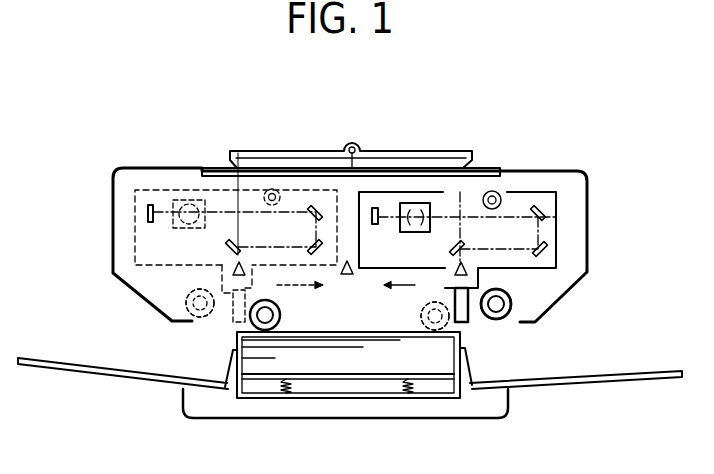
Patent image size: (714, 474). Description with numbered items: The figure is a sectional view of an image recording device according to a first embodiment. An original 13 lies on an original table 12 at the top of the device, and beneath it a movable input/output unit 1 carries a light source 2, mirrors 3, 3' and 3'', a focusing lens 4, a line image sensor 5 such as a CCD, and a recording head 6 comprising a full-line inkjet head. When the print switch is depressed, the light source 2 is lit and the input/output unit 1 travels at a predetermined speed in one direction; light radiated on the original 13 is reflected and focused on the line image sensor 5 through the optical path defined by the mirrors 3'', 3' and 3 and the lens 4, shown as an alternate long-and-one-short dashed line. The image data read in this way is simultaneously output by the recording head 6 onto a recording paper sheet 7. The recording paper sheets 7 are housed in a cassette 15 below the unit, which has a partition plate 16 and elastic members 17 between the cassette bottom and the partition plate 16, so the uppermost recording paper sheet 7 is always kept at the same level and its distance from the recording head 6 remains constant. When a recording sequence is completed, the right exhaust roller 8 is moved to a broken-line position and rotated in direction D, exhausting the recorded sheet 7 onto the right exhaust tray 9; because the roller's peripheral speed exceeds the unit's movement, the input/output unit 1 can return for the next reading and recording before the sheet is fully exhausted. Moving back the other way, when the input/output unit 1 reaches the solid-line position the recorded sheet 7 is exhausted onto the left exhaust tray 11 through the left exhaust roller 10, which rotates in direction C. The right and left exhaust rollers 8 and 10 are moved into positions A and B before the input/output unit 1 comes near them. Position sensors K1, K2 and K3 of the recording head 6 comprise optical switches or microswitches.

The input/output unit 1 is at (533, 192).
The light source 2 is at (489, 192).
The mirror 3 is at (556, 207).
The mirror 3' is at (559, 256).
The mirror 3'' is at (444, 253).
The focusing lens 4 is at (416, 204).
The line image sensor 5 is at (375, 207).
The recording head 6 is at (470, 312).
The recording paper sheet 7 is at (360, 362).
The right exhaust roller 8 is at (511, 300).
The right exhaust tray 9 is at (628, 371).
The left exhaust roller 10 is at (193, 292).
The left exhaust tray 11 is at (38, 358).
The original table 12 is at (218, 168).
The original 13 is at (311, 151).
The cassette 15 is at (462, 395).
The partition plate 16 is at (443, 375).
The elastic members 17 is at (295, 385).
The position sensor K1 is at (467, 272).
The position sensor K2 is at (347, 276).
The position sensor K3 is at (238, 262).
The roller position A is at (192, 307).
The roller position B is at (511, 310).
The rotation direction of left exhaust roller C is at (283, 313).
The rotation direction of right exhaust roller D is at (414, 307).